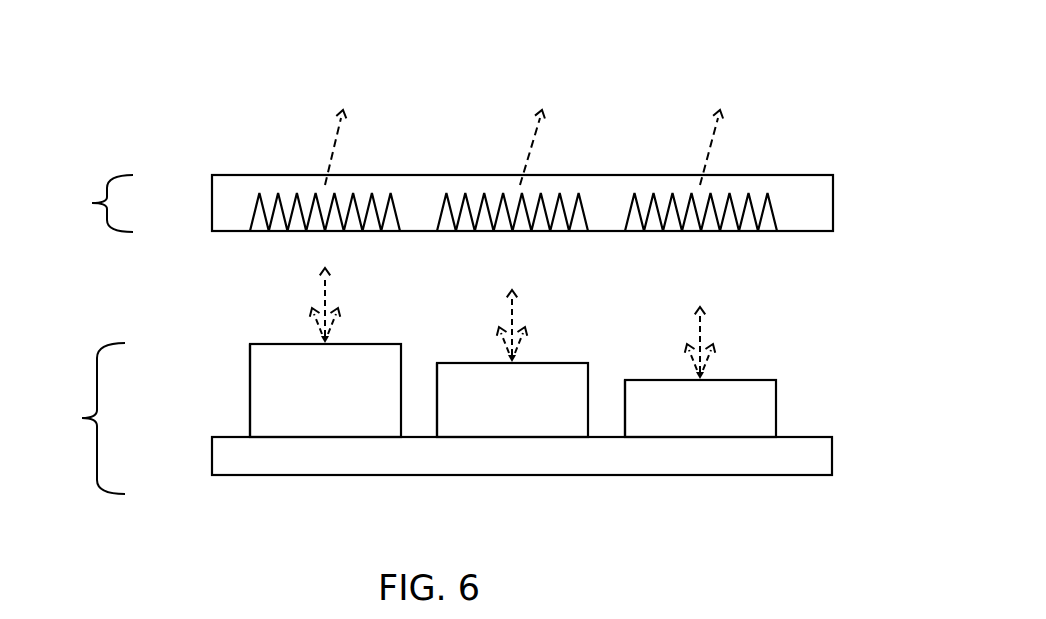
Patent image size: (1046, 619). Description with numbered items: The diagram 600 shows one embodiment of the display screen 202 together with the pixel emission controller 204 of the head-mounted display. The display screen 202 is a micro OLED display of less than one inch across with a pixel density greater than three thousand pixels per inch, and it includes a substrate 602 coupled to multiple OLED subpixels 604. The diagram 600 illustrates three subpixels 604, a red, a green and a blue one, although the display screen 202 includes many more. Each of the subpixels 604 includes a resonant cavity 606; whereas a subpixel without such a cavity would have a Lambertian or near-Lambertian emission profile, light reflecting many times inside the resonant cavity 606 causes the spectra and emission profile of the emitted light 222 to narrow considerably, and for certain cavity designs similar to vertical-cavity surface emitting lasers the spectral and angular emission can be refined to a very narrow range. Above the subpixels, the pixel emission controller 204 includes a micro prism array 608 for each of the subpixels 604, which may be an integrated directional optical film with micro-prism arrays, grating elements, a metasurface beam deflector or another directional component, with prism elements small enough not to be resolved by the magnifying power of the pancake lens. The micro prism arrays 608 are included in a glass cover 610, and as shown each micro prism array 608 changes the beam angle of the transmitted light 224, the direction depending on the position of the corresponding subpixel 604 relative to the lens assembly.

The diagram 600 is at (867, 98).
The display screen 202 is at (80, 418).
The pixel emission controller 204 is at (85, 203).
The emitted light 222 is at (247, 331).
The transmitted light 224 is at (248, 132).
The substrate 602 is at (522, 456).
The OLED subpixel 604 is at (513, 390).
The resonant cavity 606 is at (267, 389).
The micro prism array 608 is at (390, 224).
The glass cover 610 is at (812, 205).